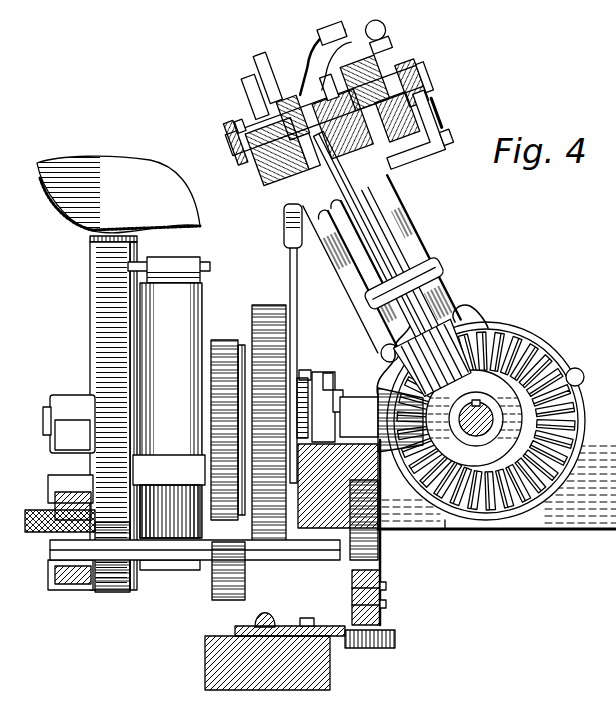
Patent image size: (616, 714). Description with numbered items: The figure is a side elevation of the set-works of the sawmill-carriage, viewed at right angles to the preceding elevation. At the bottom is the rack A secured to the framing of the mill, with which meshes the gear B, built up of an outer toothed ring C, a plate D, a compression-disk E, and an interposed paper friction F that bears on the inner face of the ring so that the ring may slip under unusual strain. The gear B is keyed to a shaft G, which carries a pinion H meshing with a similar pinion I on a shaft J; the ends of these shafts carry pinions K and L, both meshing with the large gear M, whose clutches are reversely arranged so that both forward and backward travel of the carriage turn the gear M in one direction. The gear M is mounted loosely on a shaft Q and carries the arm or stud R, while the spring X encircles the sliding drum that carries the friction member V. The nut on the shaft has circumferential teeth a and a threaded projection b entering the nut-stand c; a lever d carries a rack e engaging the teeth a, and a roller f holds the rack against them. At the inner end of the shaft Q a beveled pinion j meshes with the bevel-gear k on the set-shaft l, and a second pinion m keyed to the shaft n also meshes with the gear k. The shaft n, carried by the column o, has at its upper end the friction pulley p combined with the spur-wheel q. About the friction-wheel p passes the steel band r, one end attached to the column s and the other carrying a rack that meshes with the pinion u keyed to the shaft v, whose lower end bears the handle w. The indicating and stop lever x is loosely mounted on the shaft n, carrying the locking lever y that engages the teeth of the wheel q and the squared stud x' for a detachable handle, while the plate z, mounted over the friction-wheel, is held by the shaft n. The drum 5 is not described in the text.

The rack A is at (396, 644).
The gear B is at (382, 546).
The outer toothed ring C is at (356, 648).
The plate D is at (385, 583).
The compression-disk E is at (352, 596).
The paper friction F is at (352, 612).
The shaft G is at (200, 568).
The pinion H is at (245, 594).
The pinion I is at (195, 549).
The shaft J is at (47, 483).
The pinion K is at (115, 592).
The pinion L is at (73, 504).
The large gear M is at (100, 349).
The shaft Q is at (43, 410).
The arm or stud R is at (209, 265).
The friction face or member V is at (223, 340).
The spring X is at (267, 305).
The drum 5 is at (171, 410).
The circumferential teeth a is at (338, 486).
The threaded projection b is at (323, 407).
The nut-stand c is at (339, 390).
The lever d is at (300, 343).
The rack e is at (297, 394).
The roller f is at (308, 371).
The beveled pinion j is at (381, 420).
The bevel-gear k is at (446, 522).
The set-shaft l is at (478, 440).
The second pinion m is at (490, 333).
The shaft n is at (388, 242).
The stand or column o is at (404, 257).
The friction pulley or wheel p is at (264, 157).
The toothed or spurred wheel q is at (226, 146).
The flexible steel band or strap r is at (259, 147).
The column s is at (445, 110).
The pinion u is at (426, 78).
The shaft v is at (440, 149).
The handle w is at (408, 133).
The indicating and stop lever x is at (321, 55).
The squared or polygonal stud or projection x' is at (242, 86).
The locking lever or handle y is at (387, 32).
The plate z is at (237, 119).